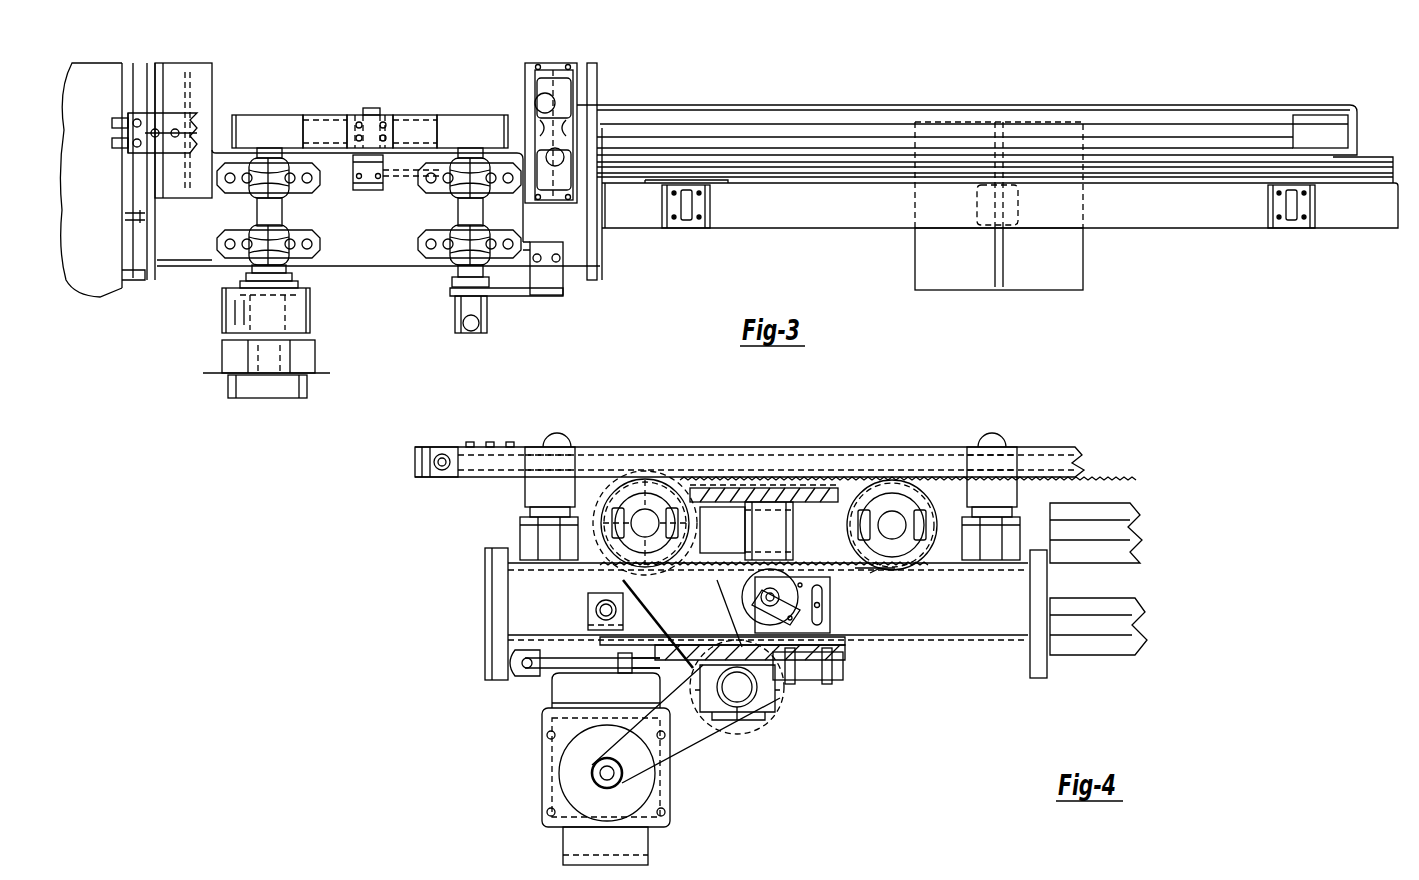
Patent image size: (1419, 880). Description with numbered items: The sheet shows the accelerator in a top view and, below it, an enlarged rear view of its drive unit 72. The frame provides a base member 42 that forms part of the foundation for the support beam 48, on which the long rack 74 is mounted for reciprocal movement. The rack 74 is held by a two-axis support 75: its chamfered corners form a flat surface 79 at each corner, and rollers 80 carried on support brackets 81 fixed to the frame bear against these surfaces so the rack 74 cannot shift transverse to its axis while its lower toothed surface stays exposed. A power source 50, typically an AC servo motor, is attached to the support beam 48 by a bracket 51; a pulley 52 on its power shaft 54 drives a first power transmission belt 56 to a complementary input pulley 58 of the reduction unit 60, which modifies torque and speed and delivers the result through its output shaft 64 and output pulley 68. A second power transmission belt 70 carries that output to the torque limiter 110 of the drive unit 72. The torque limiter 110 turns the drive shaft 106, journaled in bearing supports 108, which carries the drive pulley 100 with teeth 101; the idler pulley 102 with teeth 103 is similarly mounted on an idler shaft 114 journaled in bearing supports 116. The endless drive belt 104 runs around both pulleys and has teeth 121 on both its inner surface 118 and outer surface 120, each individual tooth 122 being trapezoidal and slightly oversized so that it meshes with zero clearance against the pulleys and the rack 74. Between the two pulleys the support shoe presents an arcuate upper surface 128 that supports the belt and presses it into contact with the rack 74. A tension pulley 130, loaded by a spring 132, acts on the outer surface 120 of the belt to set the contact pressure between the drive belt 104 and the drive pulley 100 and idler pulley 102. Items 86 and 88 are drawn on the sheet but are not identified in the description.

In FIG. 3, the base member 42 is at (1065, 257).
In FIG. 3, the support beam 48 is at (345, 262).
In FIG. 4, the power source 50 is at (545, 818).
In FIG. 4, the bracket 51 is at (555, 692).
In FIG. 4, the pulley 52 is at (650, 800).
In FIG. 4, the power shaft 54 is at (600, 772).
In FIG. 4, the first power transmission belt 56 is at (700, 765).
In FIG. 4, the input pulley 58 is at (758, 725).
In FIG. 4, the reduction unit 60 is at (790, 686).
In FIG. 4, the output shaft 64 is at (770, 710).
In FIG. 4, the output pulley 68 is at (900, 636).
In FIG. 4, the second power transmission belt 70 is at (600, 600).
In FIG. 4, the drive unit 72 is at (600, 497).
In FIG. 3, the rack 74 is at (1258, 118).
In FIG. 4, the rack 74 is at (610, 460).
In FIG. 3, the two-axis support 75 is at (555, 63).
In FIG. 4, the two-axis support 75 is at (556, 434).
In FIG. 3, the flat surface 79 is at (688, 152).
In FIG. 3, the rollers 80 is at (555, 103).
In FIG. 3, the support brackets 81 is at (562, 68).
In FIG. 3, the end plate 86 is at (1365, 160).
In FIG. 3, the mounting bracket 88 is at (688, 228).
In FIG. 3, the drive pulley 100 is at (265, 113).
In FIG. 4, the drive pulley 100 is at (660, 480).
In FIG. 4, the teeth 101 is at (684, 478).
In FIG. 3, the idler pulley 102 is at (470, 113).
In FIG. 4, the idler pulley 102 is at (868, 494).
In FIG. 4, the teeth 103 is at (838, 500).
In FIG. 3, the endless drive belt 104 is at (325, 115).
In FIG. 4, the endless drive belt 104 is at (760, 492).
In FIG. 3, the drive shaft 106 is at (273, 198).
In FIG. 3, the bearing supports 108 is at (247, 180).
In FIG. 3, the torque limiter 110 is at (208, 350).
In FIG. 4, the torque limiter 110 is at (600, 515).
In FIG. 3, the idler shaft 114 is at (448, 208).
In FIG. 3, the bearing supports 116 is at (452, 182).
In FIG. 4, the inner surface 118 is at (852, 572).
In FIG. 4, the outer surface 120 is at (880, 563).
In FIG. 4, the teeth 121 is at (812, 566).
In FIG. 4, the individual tooth 122 is at (730, 555).
In FIG. 4, the arcuate upper surface 128 is at (752, 482).
In FIG. 3, the tension pulley 130 is at (385, 115).
In FIG. 4, the tension pulley 130 is at (735, 580).
In FIG. 4, the spring 132 is at (845, 612).